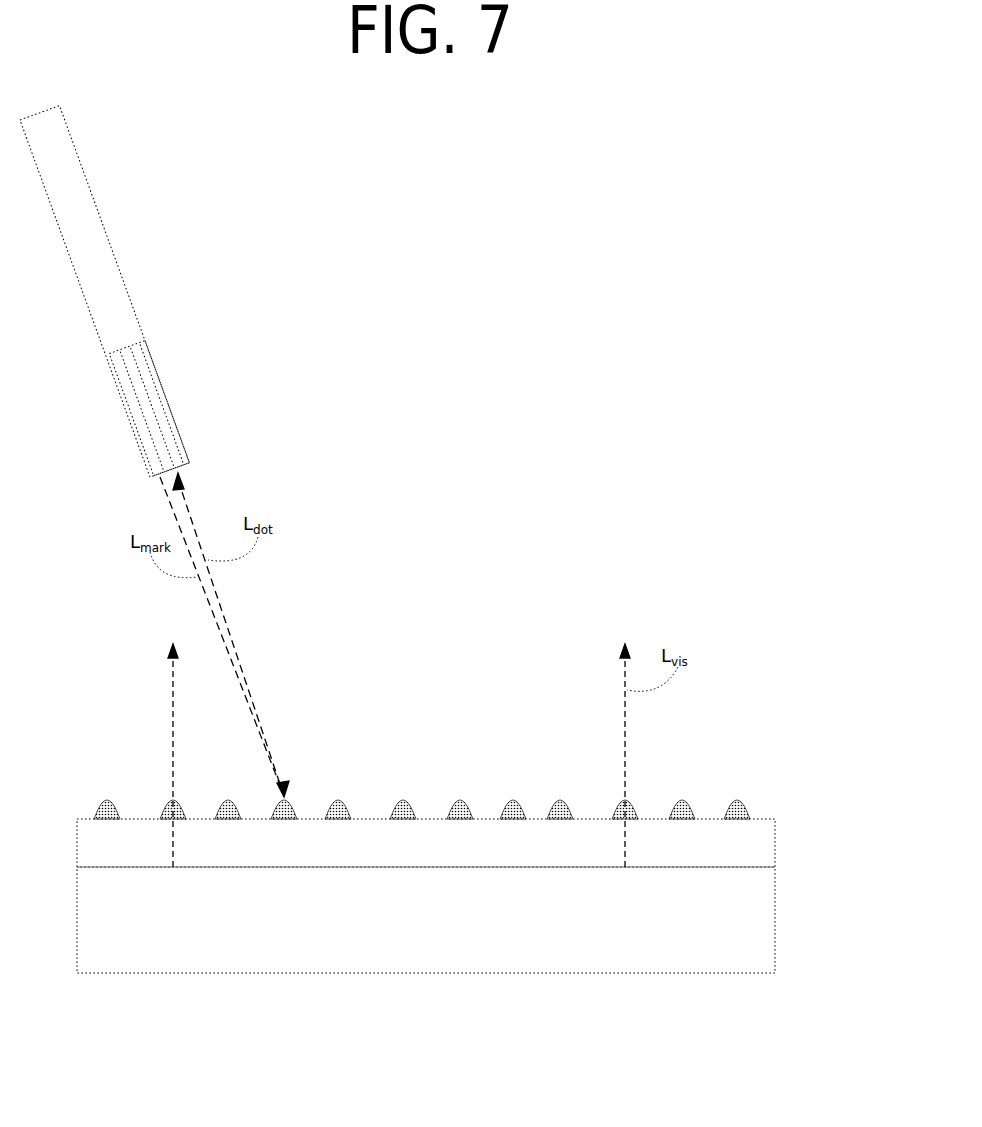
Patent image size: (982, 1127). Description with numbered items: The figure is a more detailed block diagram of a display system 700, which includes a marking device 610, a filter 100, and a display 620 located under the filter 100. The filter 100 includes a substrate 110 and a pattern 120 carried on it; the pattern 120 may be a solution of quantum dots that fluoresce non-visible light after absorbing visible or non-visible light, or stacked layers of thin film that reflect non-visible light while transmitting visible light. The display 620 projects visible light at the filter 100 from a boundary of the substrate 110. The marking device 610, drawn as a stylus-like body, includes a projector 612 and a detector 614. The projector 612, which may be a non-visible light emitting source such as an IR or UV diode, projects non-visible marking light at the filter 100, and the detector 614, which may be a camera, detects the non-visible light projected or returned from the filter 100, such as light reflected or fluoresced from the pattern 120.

The display system 700 is at (628, 268).
The marking device 610 is at (127, 292).
The projector 612 is at (138, 443).
The detector 614 is at (173, 423).
The filter 100 is at (809, 786).
The substrate 110 is at (752, 847).
The pattern 120 is at (749, 812).
The display 620 is at (775, 935).